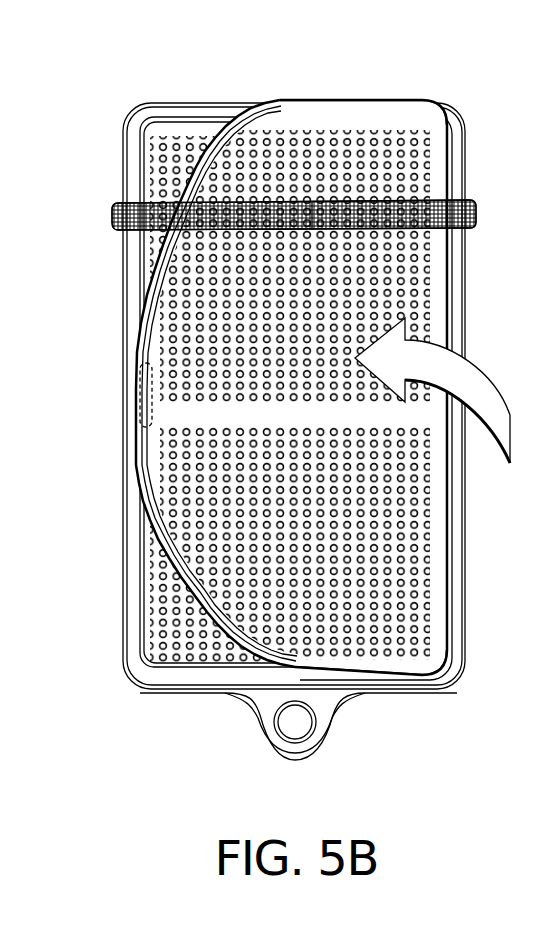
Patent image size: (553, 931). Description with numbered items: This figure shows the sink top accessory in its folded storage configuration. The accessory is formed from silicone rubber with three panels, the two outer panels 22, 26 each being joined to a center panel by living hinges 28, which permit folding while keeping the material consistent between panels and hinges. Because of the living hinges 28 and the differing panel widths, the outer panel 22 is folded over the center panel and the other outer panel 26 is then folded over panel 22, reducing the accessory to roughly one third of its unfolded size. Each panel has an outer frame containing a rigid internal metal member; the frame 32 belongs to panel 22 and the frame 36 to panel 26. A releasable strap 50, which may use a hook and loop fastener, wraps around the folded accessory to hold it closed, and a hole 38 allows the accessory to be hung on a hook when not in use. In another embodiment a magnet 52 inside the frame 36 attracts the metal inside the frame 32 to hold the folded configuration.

The outer panel 22 is at (188, 137).
The outer panel 26 is at (333, 135).
The living hinge 28 is at (460, 628).
The outer frame 32 is at (130, 433).
The outer frame 36 is at (143, 458).
The hole 38 is at (317, 733).
The releasable strap 50 is at (475, 213).
The magnet 52 is at (140, 393).